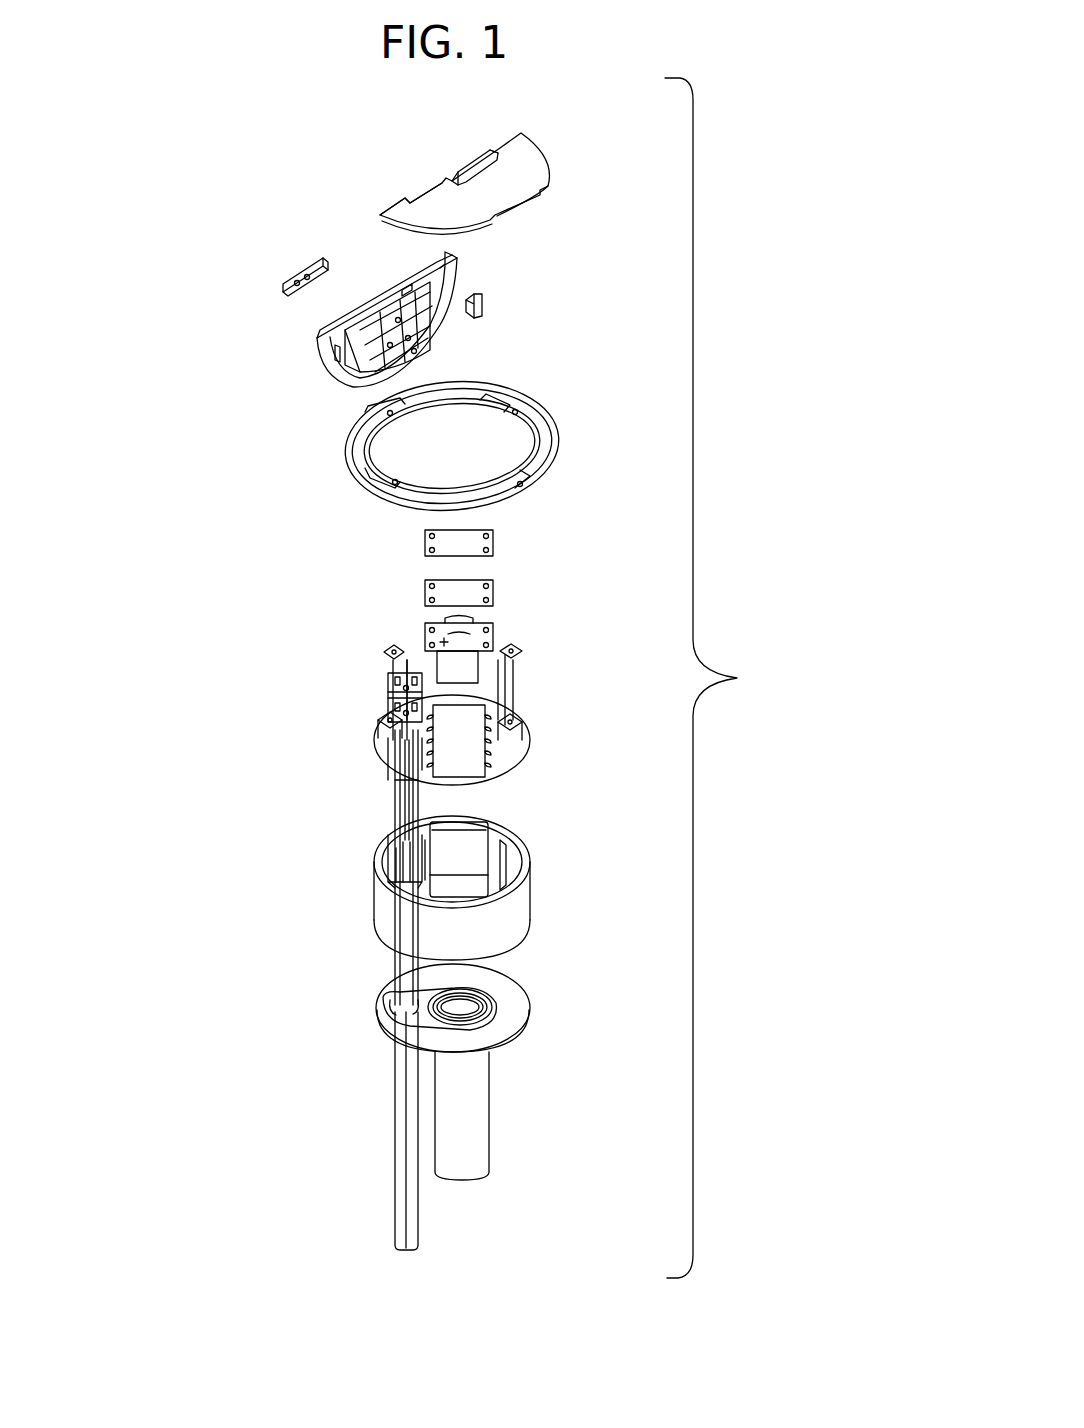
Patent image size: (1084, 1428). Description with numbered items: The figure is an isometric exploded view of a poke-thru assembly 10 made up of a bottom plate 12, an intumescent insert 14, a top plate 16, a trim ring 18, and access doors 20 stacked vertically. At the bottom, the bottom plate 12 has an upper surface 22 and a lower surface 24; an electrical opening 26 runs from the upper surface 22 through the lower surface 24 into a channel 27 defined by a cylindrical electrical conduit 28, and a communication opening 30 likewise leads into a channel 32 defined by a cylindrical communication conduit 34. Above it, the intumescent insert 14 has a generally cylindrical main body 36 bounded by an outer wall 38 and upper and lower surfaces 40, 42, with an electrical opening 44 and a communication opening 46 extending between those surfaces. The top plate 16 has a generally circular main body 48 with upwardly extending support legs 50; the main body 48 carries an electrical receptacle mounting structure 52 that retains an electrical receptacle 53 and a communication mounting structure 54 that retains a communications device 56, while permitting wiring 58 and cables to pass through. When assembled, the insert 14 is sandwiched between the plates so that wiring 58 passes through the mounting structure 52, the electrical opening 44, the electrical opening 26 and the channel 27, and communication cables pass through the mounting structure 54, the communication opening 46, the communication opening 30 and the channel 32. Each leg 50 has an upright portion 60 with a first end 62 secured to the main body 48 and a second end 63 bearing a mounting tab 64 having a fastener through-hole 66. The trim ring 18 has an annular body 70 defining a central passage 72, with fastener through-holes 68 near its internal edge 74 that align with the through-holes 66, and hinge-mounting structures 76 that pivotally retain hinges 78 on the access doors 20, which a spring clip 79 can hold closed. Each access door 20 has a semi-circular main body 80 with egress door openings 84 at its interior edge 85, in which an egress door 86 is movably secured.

The poke-thru assembly 10 is at (738, 678).
The bottom plate 12 is at (468, 1006).
The intumescent insert 14 is at (463, 875).
The top plate 16 is at (463, 824).
The trim ring 18 is at (444, 439).
The access doors 20 is at (442, 229).
The upper surface 22 is at (514, 998).
The lower surface 24 is at (505, 1050).
The electrical opening 26 is at (388, 1010).
The channel 27 is at (406, 1250).
The electrical conduit 28 is at (396, 1176).
The communication opening 30 is at (472, 1012).
The channel 32 is at (470, 1182).
The communication conduit 34 is at (478, 1127).
The main body 36 is at (516, 842).
The outer wall 38 is at (376, 902).
The upper surface 40 is at (396, 836).
The lower surface 42 is at (384, 935).
The electrical opening 44 is at (404, 862).
The communication opening 46 is at (467, 860).
The main body 48 is at (378, 736).
The support legs 50 is at (388, 652).
The electrical receptacle mounting structure 52 is at (392, 752).
The electrical receptacle 53 is at (388, 677).
The communication mounting structure 54 is at (490, 710).
The communications device 56 is at (510, 528).
The wiring 58 is at (422, 802).
The upright portion 60 is at (516, 660).
The first end 62 is at (398, 768).
The second end 63 is at (407, 656).
The mounting tab 64 is at (382, 652).
The fastener through-hole 66 is at (520, 720).
The fastener through-holes 68 is at (388, 477).
The annular body 70 is at (560, 441).
The central passage 72 is at (478, 464).
The internal edge 74 is at (362, 478).
The hinge-mounting structures 76 is at (368, 410).
The hinges 78 is at (405, 374).
The spring clip 79 is at (484, 304).
The main body 80 is at (500, 197).
The egress door openings 84 is at (430, 190).
The interior edge 85 is at (507, 135).
The egress door 86 is at (285, 284).